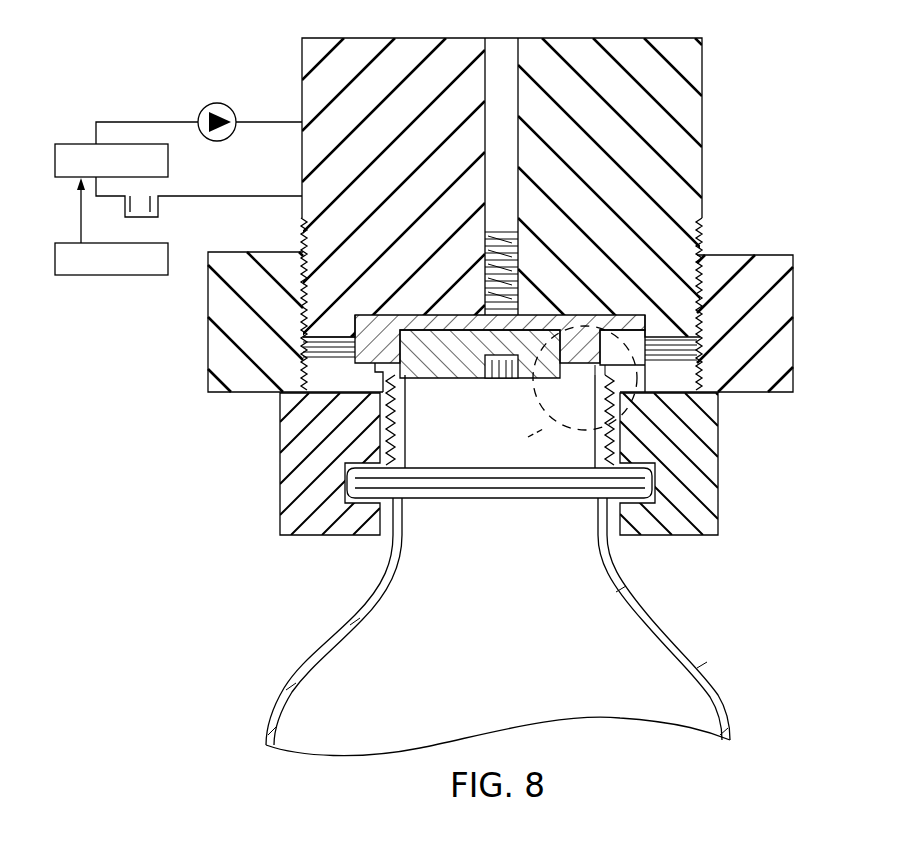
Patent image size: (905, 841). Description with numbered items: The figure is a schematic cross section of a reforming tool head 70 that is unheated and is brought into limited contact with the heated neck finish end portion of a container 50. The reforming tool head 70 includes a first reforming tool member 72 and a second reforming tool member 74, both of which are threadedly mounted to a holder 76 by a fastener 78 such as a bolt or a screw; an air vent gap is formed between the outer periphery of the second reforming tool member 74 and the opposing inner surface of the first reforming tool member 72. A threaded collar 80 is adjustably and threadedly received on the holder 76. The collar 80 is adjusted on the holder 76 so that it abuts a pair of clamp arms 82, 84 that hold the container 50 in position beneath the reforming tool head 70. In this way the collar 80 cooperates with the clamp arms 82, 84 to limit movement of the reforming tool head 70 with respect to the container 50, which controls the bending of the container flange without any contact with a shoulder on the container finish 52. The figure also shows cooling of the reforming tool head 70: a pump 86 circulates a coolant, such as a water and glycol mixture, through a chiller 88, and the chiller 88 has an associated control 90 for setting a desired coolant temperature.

The container 50 is at (286, 663).
The container finish 52 is at (593, 439).
The reforming tool head 70 is at (500, 378).
The first reforming tool member 72 is at (572, 327).
The second reforming tool member 74 is at (560, 376).
The holder 76 is at (628, 48).
The fastener 78 is at (519, 244).
The threaded collar 80 is at (750, 268).
The clamp arm 82 is at (705, 494).
The clamp arm 84 is at (290, 478).
The pump 86 is at (213, 103).
The chiller 88 is at (68, 143).
The control 90 is at (113, 278).